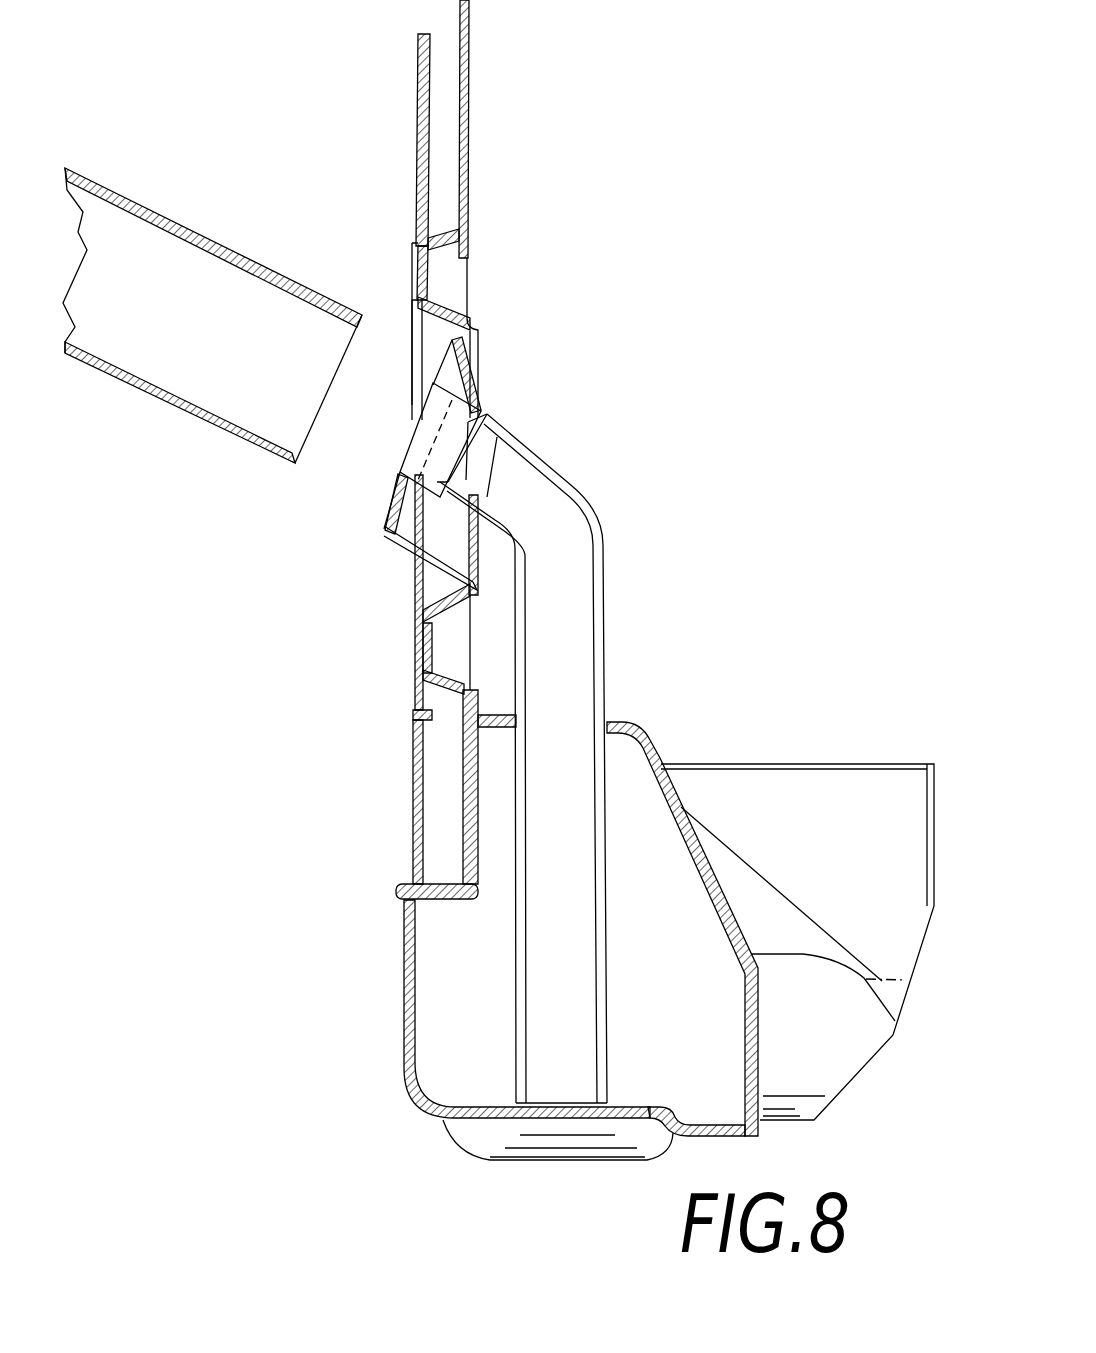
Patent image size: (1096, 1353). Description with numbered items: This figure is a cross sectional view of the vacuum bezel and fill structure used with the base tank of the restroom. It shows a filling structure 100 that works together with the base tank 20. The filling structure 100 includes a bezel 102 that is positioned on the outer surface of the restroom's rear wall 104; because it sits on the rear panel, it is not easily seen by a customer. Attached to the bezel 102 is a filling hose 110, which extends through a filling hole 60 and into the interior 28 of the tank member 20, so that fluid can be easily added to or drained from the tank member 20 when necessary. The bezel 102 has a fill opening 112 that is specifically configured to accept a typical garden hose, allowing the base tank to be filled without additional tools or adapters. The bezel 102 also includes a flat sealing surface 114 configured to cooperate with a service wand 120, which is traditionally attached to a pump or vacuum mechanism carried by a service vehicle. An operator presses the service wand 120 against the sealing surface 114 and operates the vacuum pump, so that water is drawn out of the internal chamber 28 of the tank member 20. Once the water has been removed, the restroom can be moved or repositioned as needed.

The base tank 20 is at (404, 1008).
The interior 28 is at (682, 991).
The filling hole 60 is at (605, 720).
The filling structure 100 is at (339, 543).
The bezel 102 is at (400, 536).
The rear wall 104 is at (443, 172).
The filling hose 110 is at (570, 543).
The fill opening 112 is at (473, 455).
The flat sealing surface 114 is at (390, 510).
The service wand 120 is at (117, 225).